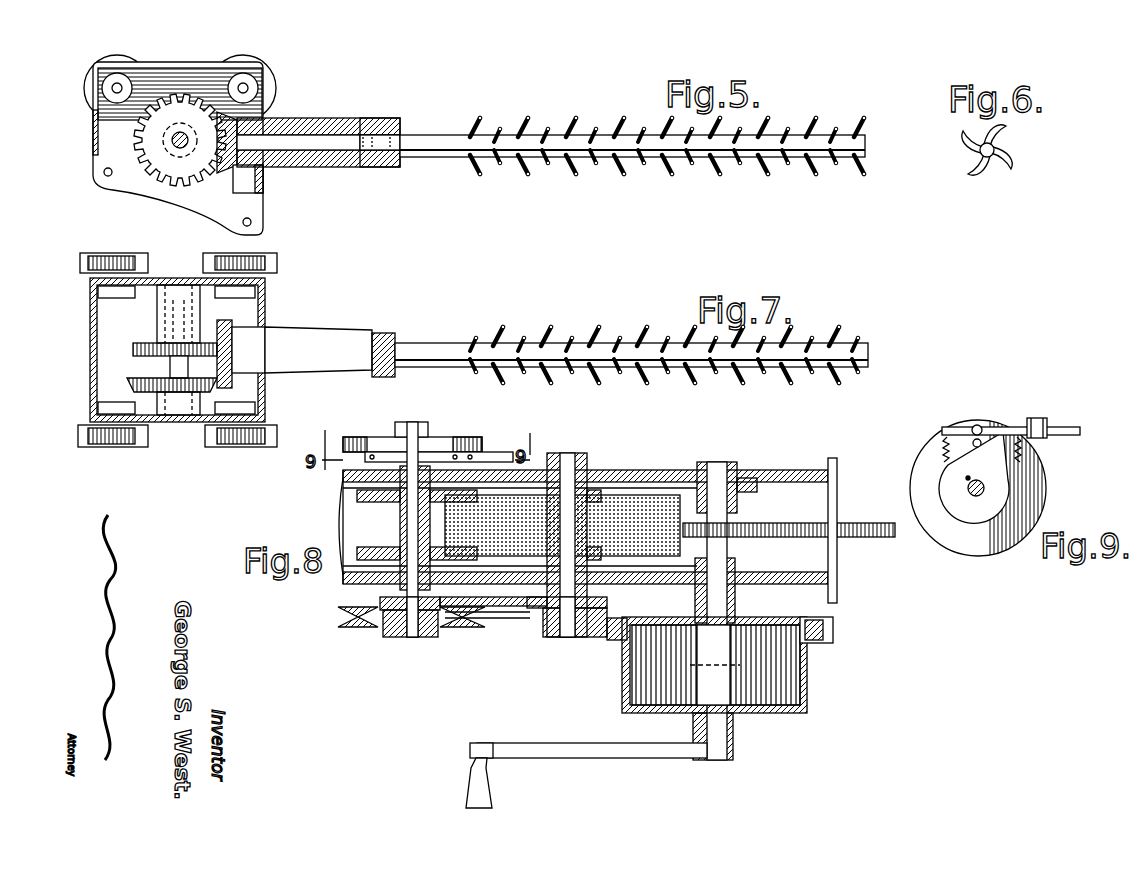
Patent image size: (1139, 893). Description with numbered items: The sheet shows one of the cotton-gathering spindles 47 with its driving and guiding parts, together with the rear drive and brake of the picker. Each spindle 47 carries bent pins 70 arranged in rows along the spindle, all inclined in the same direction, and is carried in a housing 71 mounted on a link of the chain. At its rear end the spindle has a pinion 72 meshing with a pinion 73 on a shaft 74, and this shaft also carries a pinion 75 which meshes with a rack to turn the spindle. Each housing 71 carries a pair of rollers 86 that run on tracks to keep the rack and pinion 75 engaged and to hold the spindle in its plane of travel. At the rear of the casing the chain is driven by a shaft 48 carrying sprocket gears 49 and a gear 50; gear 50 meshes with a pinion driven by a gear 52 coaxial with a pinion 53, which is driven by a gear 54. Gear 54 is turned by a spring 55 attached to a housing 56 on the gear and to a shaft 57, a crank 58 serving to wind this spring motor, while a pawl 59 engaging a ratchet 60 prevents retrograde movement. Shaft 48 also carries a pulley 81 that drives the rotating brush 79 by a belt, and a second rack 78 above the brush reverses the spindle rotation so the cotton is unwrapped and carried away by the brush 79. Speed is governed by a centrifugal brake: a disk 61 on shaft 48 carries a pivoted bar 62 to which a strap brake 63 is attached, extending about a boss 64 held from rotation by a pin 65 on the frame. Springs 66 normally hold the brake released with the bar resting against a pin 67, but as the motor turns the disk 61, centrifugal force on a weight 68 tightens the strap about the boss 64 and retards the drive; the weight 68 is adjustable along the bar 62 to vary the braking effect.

In FIG. 5, the spindle 47 is at (452, 135).
In FIG. 6, the spindle 47 is at (997, 150).
In FIG. 7, the spindle 47 is at (505, 343).
In FIG. 8, the shaft 48 is at (411, 637).
In FIG. 9, the shaft 48 is at (976, 498).
In FIG. 8, the sprocket gears 49 is at (353, 545).
In FIG. 8, the gear 50 is at (380, 603).
In FIG. 8, the gear 52 is at (490, 620).
In FIG. 8, the pinion 53 is at (535, 618).
In FIG. 8, the gear 54 is at (833, 627).
In FIG. 8, the spring 55 is at (800, 666).
In FIG. 8, the housing 56 is at (808, 700).
In FIG. 8, the shaft 57 is at (730, 555).
In FIG. 8, the crank 58 is at (540, 752).
In FIG. 8, the pawl 59 is at (662, 484).
In FIG. 8, the ratchet 60 is at (747, 480).
In FIG. 8, the disk 61 is at (447, 445).
In FIG. 9, the disk 61 is at (1045, 487).
In FIG. 8, the pivoted bar 62 is at (500, 453).
In FIG. 9, the pivoted bar 62 is at (1078, 430).
In FIG. 9, the strap brake 63 is at (914, 487).
In FIG. 9, the boss 64 is at (955, 505).
In FIG. 8, the pin 65 is at (357, 496).
In FIG. 9, the pin 65 is at (977, 459).
In FIG. 9, the springs 66 is at (930, 455).
In FIG. 9, the pin 67 is at (985, 426).
In FIG. 8, the weight 68 is at (478, 453).
In FIG. 9, the weight 68 is at (1040, 420).
In FIG. 5, the bent pins 70 is at (595, 124).
In FIG. 6, the bent pins 70 is at (987, 163).
In FIG. 7, the bent pins 70 is at (664, 343).
In FIG. 5, the housing 71 is at (176, 64).
In FIG. 7, the housing 71 is at (265, 305).
In FIG. 5, the pinion 72 is at (247, 190).
In FIG. 7, the pinion 72 is at (216, 342).
In FIG. 7, the pinion 73 is at (130, 385).
In FIG. 5, the shaft 74 is at (178, 144).
In FIG. 7, the shaft 74 is at (170, 367).
In FIG. 5, the pinion 75 is at (221, 156).
In FIG. 7, the pinion 75 is at (135, 346).
In FIG. 8, the rack 78 is at (857, 523).
In FIG. 8, the rotating brush 79 is at (638, 556).
In FIG. 8, the pulley 81 is at (352, 630).
In FIG. 5, the rollers 86 is at (128, 60).
In FIG. 7, the rollers 86 is at (205, 256).